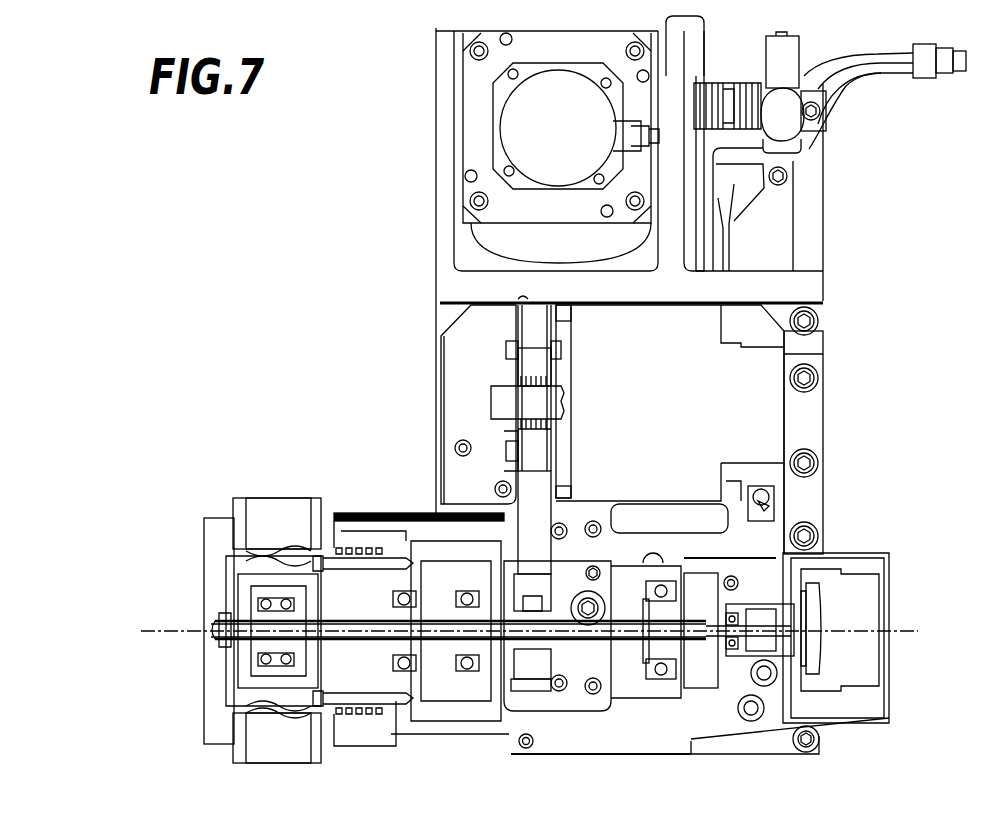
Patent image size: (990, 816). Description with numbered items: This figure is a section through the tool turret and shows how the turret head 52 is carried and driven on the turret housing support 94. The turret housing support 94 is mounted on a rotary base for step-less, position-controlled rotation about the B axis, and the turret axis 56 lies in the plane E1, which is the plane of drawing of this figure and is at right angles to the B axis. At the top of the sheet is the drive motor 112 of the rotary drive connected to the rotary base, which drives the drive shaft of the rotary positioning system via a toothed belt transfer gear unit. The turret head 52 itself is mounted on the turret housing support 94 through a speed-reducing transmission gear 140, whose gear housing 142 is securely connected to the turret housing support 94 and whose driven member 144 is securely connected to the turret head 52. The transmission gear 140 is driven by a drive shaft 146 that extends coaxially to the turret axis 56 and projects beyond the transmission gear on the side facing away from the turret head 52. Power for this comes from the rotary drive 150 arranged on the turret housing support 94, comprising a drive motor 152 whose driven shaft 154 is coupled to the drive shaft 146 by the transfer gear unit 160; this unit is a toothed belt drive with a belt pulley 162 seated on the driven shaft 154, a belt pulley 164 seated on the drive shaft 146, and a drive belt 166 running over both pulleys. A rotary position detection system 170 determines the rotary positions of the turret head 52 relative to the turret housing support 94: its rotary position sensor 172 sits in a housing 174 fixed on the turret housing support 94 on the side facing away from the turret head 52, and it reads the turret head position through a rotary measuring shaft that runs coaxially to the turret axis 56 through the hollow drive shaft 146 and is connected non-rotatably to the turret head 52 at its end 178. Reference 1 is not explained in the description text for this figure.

The drive shaft end 1 is at (210, 637).
The turret head 52 is at (325, 535).
The turret axis 56 is at (152, 630).
The turret housing support 94 is at (803, 498).
The drive motor 112 is at (483, 88).
The transmission gear 140 is at (433, 573).
The gear housing 142 is at (440, 542).
The driven member 144 is at (400, 578).
The drive shaft 146 is at (523, 647).
The rotary drive 150 is at (498, 443).
The drive motor 152 is at (735, 400).
The driven shaft 154 is at (500, 395).
The transfer gear unit 160 is at (495, 473).
The belt pulley 162 is at (532, 380).
The belt pulley 164 is at (527, 673).
The drive belt 166 is at (535, 482).
The rotary position detection system 170 is at (825, 600).
The rotary position sensor 172 is at (825, 620).
The housing 174 is at (860, 662).
The end 178 is at (265, 632).
The B axis B is at (587, 607).
The plane E1 is at (172, 527).